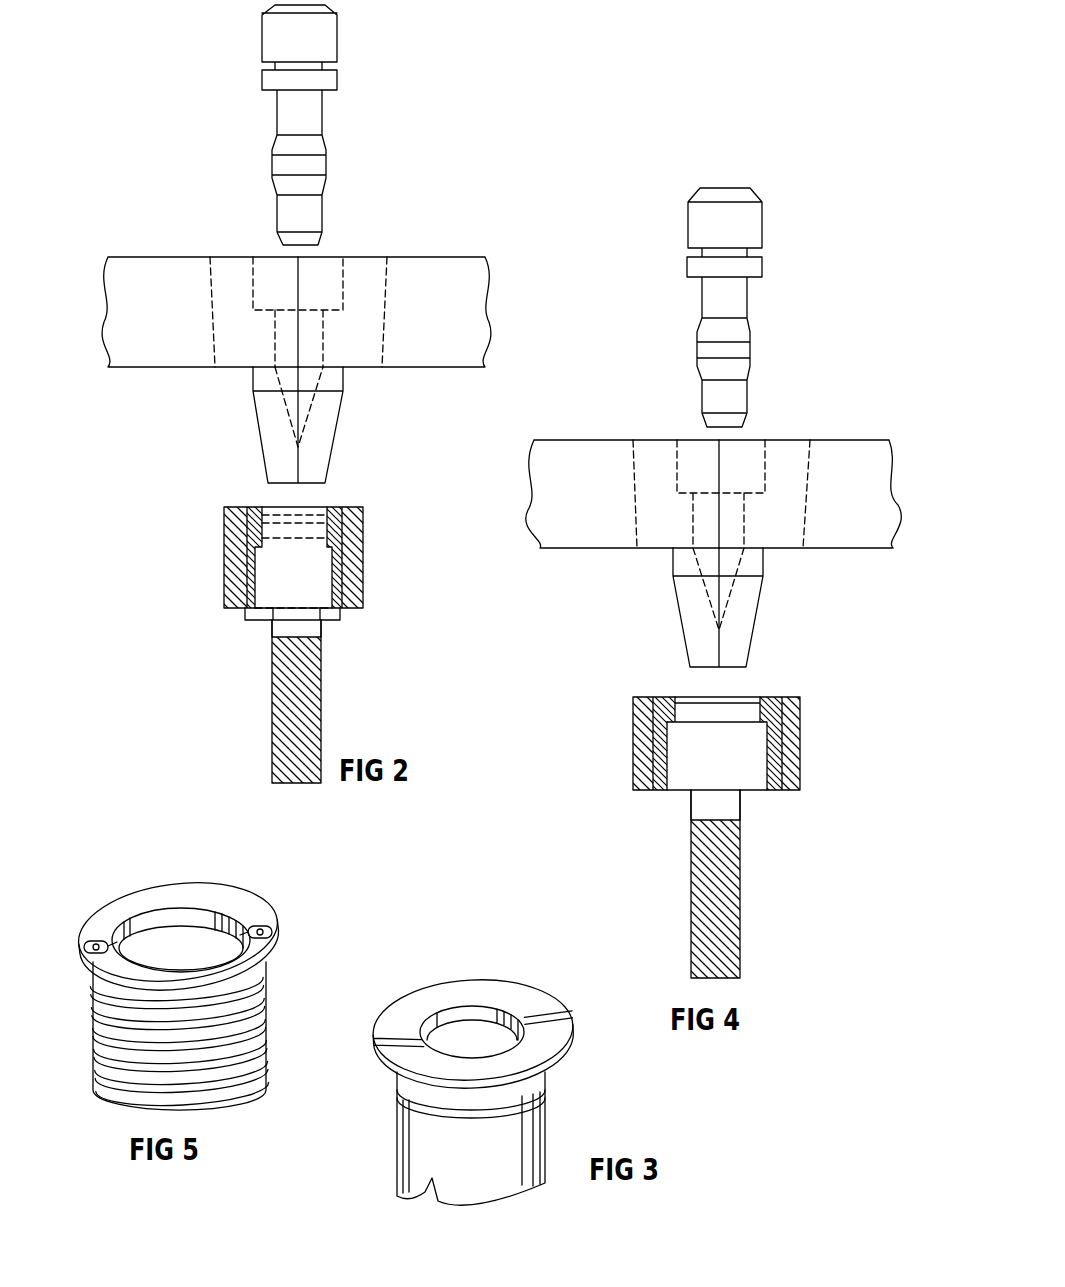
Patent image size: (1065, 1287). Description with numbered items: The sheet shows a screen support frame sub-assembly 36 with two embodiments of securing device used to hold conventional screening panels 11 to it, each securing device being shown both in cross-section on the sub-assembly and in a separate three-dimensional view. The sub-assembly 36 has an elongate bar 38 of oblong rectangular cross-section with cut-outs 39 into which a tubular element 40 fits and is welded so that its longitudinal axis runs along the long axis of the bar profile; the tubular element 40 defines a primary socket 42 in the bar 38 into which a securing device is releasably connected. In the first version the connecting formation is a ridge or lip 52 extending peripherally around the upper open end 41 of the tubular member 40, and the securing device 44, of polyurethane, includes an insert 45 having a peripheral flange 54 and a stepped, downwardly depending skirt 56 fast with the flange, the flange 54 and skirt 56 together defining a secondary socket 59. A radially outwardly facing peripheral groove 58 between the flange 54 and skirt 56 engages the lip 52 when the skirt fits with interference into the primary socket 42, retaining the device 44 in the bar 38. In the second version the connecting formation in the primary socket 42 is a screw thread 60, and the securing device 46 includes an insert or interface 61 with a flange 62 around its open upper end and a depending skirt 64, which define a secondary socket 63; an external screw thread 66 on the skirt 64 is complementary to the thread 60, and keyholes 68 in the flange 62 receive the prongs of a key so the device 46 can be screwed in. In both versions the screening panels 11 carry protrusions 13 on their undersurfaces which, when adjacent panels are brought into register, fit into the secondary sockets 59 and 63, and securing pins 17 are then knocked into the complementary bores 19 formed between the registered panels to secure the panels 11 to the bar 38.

In FIG. 2, the screening panels 11 is at (158, 254).
In FIG. 4, the screening panels 11 is at (583, 437).
In FIG. 2, the protrusions 13 is at (258, 440).
In FIG. 4, the protrusions 13 is at (676, 627).
In FIG. 4, the securing pins 17 is at (726, 187).
In FIG. 2, the bores 19 is at (329, 254).
In FIG. 4, the bores 19 is at (757, 437).
In FIG. 2, the screen support frame sub-assembly 36 is at (338, 709).
In FIG. 4, the screen support frame sub-assembly 36 is at (762, 876).
In FIG. 2, the elongate bar 38 is at (272, 717).
In FIG. 4, the elongate bar 38 is at (740, 924).
In FIG. 2, the cut-outs 39 is at (324, 630).
In FIG. 4, the cut-outs 39 is at (728, 807).
In FIG. 2, the tubular element 40 is at (279, 557).
In FIG. 4, the tubular element 40 is at (800, 748).
In FIG. 2, the upper open end 41 is at (344, 495).
In FIG. 2, the primary socket 42 is at (243, 572).
In FIG. 4, the primary socket 42 is at (679, 795).
In FIG. 2, the securing device 44 is at (300, 576).
In FIG. 3, the securing device 44 is at (540, 988).
In FIG. 3, the insert 45 is at (559, 1093).
In FIG. 4, the securing device 46 is at (685, 801).
In FIG. 5, the securing device 46 is at (284, 1018).
In FIG. 2, the ridge or lip 52 is at (244, 527).
In FIG. 3, the peripheral flange 54 is at (466, 988).
In FIG. 3, the skirt 56 is at (408, 1128).
In FIG. 2, the peripheral groove 58 is at (347, 524).
In FIG. 3, the peripheral groove 58 is at (452, 1106).
In FIG. 3, the secondary socket 59 is at (479, 1032).
In FIG. 4, the screw thread 60 is at (656, 733).
In FIG. 5, the insert or interface 61 is at (302, 916).
In FIG. 5, the flange 62 is at (169, 882).
In FIG. 5, the secondary socket 63 is at (186, 936).
In FIG. 5, the skirt 64 is at (150, 1043).
In FIG. 5, the external screw thread 66 is at (86, 1022).
In FIG. 5, the keyholes 68 is at (88, 940).